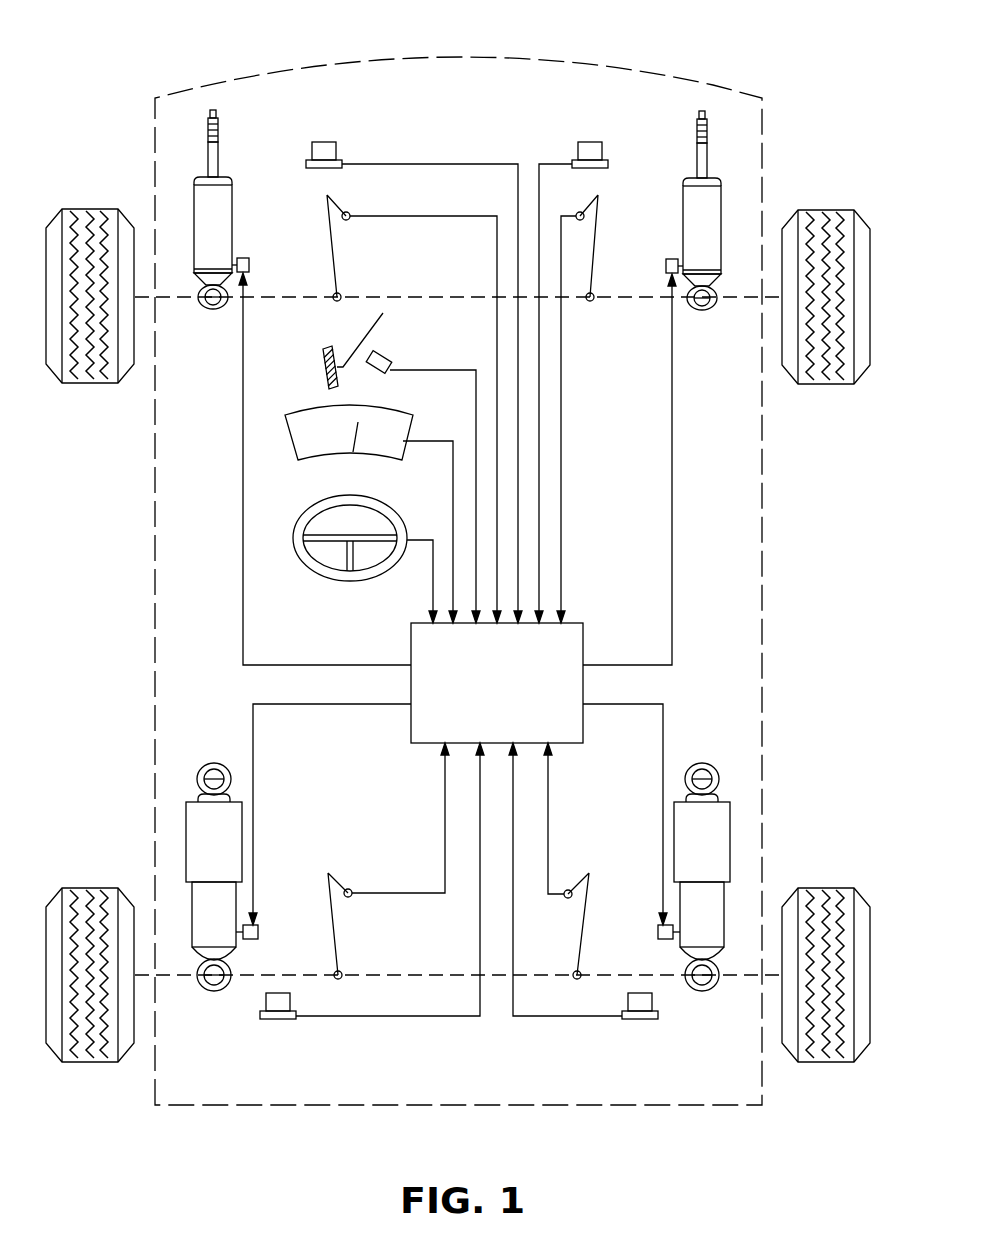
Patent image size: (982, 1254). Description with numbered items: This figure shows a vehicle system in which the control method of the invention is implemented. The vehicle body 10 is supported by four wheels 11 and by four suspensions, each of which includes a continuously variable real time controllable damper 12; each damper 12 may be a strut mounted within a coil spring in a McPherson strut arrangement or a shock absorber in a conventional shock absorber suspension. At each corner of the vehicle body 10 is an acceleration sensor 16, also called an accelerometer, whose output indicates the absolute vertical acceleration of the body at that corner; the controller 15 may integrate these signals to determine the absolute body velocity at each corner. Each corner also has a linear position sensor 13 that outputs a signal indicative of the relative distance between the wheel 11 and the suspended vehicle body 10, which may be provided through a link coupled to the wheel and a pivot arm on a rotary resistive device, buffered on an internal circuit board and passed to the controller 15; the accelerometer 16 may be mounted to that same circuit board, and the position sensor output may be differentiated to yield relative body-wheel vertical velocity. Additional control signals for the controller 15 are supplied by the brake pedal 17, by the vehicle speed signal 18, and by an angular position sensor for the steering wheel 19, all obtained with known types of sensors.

The vehicle body 10 is at (208, 78).
The wheel 11 is at (98, 218).
The continuously variable real time controllable damper 12 is at (222, 246).
The linear position sensor 13 is at (340, 250).
The controller 15 is at (573, 647).
The acceleration sensor 16 is at (335, 150).
The brake pedal 17 is at (322, 372).
The vehicle speed signal 18 is at (392, 420).
The steering wheel 19 is at (298, 528).